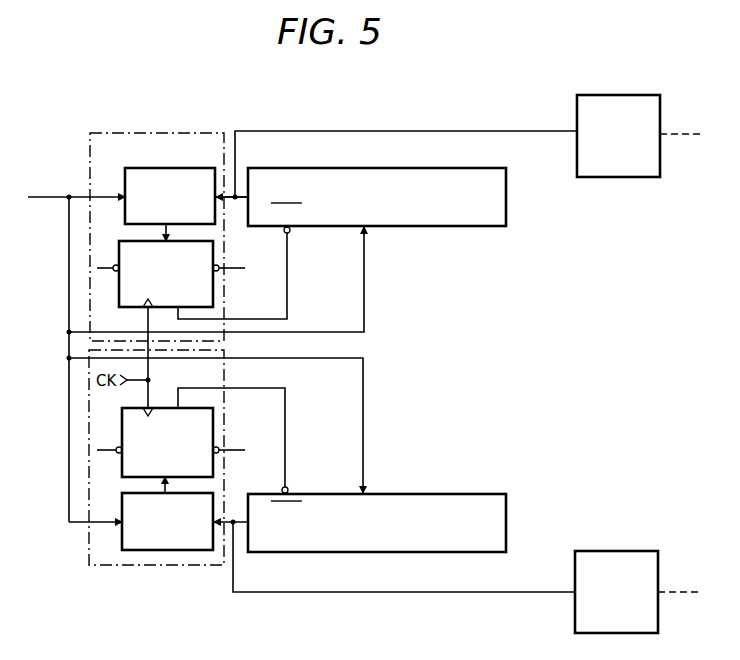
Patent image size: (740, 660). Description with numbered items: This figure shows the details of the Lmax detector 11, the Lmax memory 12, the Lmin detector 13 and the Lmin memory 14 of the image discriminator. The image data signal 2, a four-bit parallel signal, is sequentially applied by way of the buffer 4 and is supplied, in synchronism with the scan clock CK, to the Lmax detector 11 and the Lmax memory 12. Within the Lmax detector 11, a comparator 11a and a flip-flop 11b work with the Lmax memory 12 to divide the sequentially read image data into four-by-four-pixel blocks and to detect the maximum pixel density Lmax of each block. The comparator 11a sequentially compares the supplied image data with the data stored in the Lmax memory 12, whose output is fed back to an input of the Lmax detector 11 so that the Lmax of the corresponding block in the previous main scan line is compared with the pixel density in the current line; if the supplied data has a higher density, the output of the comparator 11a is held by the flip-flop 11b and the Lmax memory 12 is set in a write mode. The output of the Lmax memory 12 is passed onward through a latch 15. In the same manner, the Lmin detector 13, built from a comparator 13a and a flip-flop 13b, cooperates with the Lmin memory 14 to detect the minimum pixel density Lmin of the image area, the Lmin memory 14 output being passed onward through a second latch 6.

The image data signal 2 is at (38, 196).
The buffer 4 is at (49, 203).
The latch 6 is at (628, 551).
The Lmax detector 11 is at (226, 222).
The comparator 11a is at (187, 150).
The flip-flop 11b is at (213, 295).
The Lmax memory 12 is at (483, 155).
The Lmin detector 13 is at (226, 372).
The comparator 13a is at (219, 498).
The flip-flop 13b is at (213, 418).
The Lmin memory 14 is at (468, 494).
The latch 15 is at (623, 95).